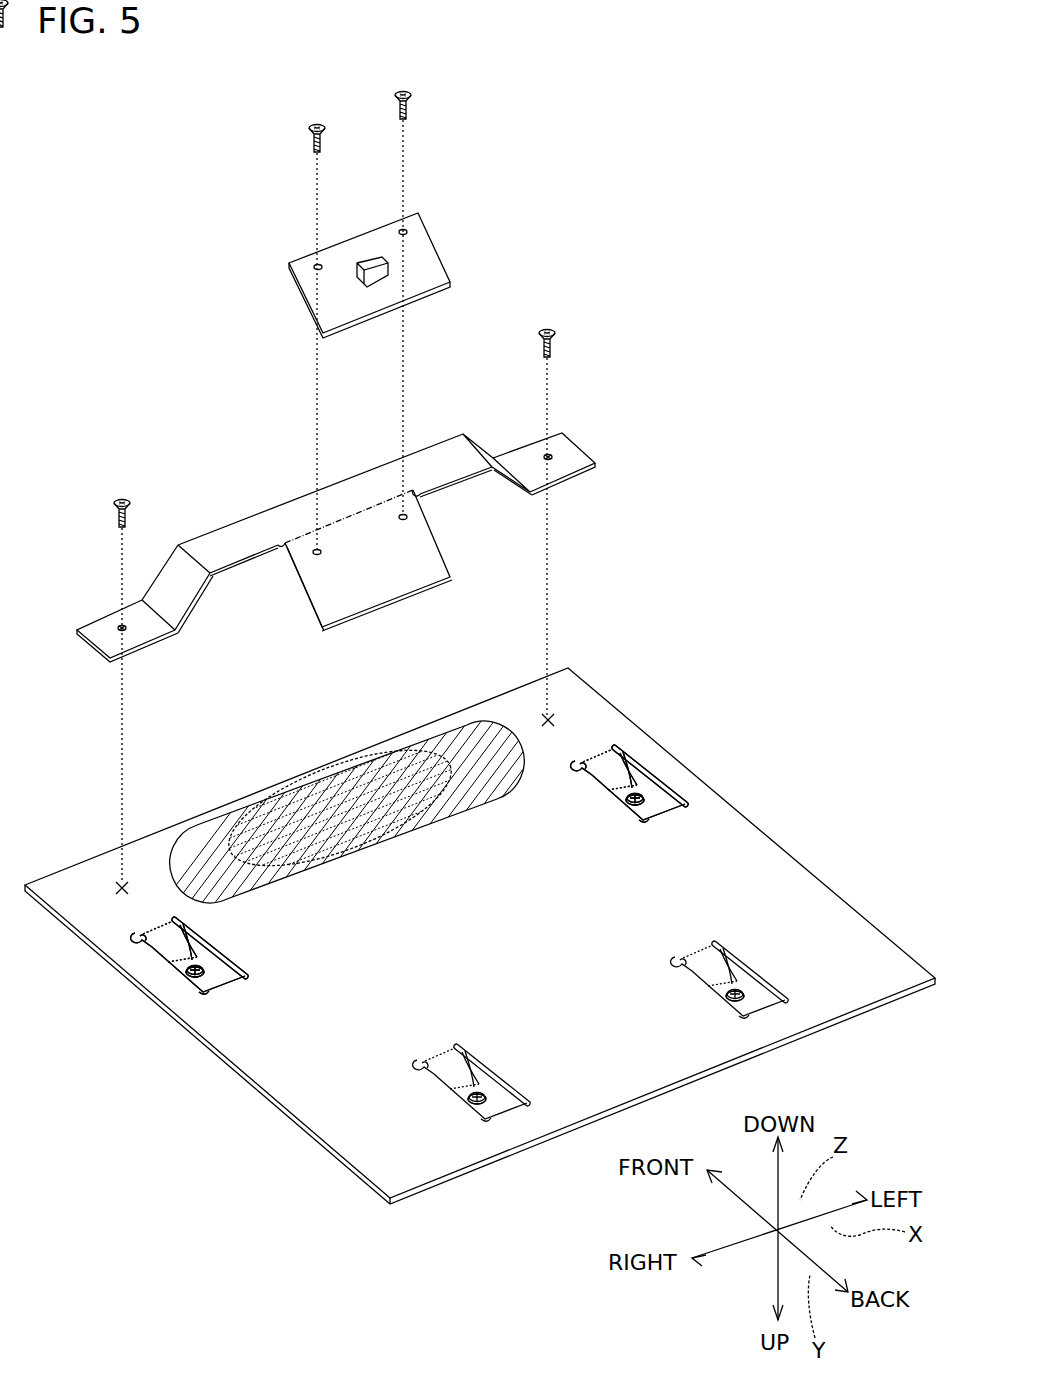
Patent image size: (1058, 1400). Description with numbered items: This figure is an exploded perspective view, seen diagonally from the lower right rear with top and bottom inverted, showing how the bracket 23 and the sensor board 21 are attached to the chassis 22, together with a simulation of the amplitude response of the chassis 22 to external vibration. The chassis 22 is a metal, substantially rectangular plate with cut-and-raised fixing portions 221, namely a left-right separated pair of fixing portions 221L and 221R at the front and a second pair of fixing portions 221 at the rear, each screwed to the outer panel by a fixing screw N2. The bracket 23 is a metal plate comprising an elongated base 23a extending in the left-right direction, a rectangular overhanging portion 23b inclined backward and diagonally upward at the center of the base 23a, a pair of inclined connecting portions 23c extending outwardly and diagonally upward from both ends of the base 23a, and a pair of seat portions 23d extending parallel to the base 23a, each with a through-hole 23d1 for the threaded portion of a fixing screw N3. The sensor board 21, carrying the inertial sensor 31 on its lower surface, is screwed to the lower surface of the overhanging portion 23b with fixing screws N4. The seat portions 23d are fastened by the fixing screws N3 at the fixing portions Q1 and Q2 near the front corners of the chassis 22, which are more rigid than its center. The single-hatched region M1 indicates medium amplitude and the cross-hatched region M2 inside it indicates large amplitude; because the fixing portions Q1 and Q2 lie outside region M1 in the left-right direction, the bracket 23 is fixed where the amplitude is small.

The sensor board 21 is at (425, 252).
The inertial sensor 31 is at (375, 258).
The fixing screw N4 is at (312, 125).
The fixing screw N3 is at (552, 330).
The fixing screw N2 is at (632, 790).
The bracket 23 is at (342, 501).
The base 23a is at (250, 535).
The overhanging portion 23b is at (440, 565).
The inclined connecting portion 23c is at (172, 583).
The seat portion 23d is at (100, 612).
The through-hole 23d1 is at (110, 632).
The chassis 22 is at (740, 855).
The fixing portion 221 is at (762, 962).
The fixing portion 221L is at (658, 792).
The fixing portion 221R is at (175, 992).
The region M1 is at (450, 812).
The region M2 is at (372, 840).
The fixing portion Q1 is at (120, 882).
The fixing portion Q2 is at (552, 718).